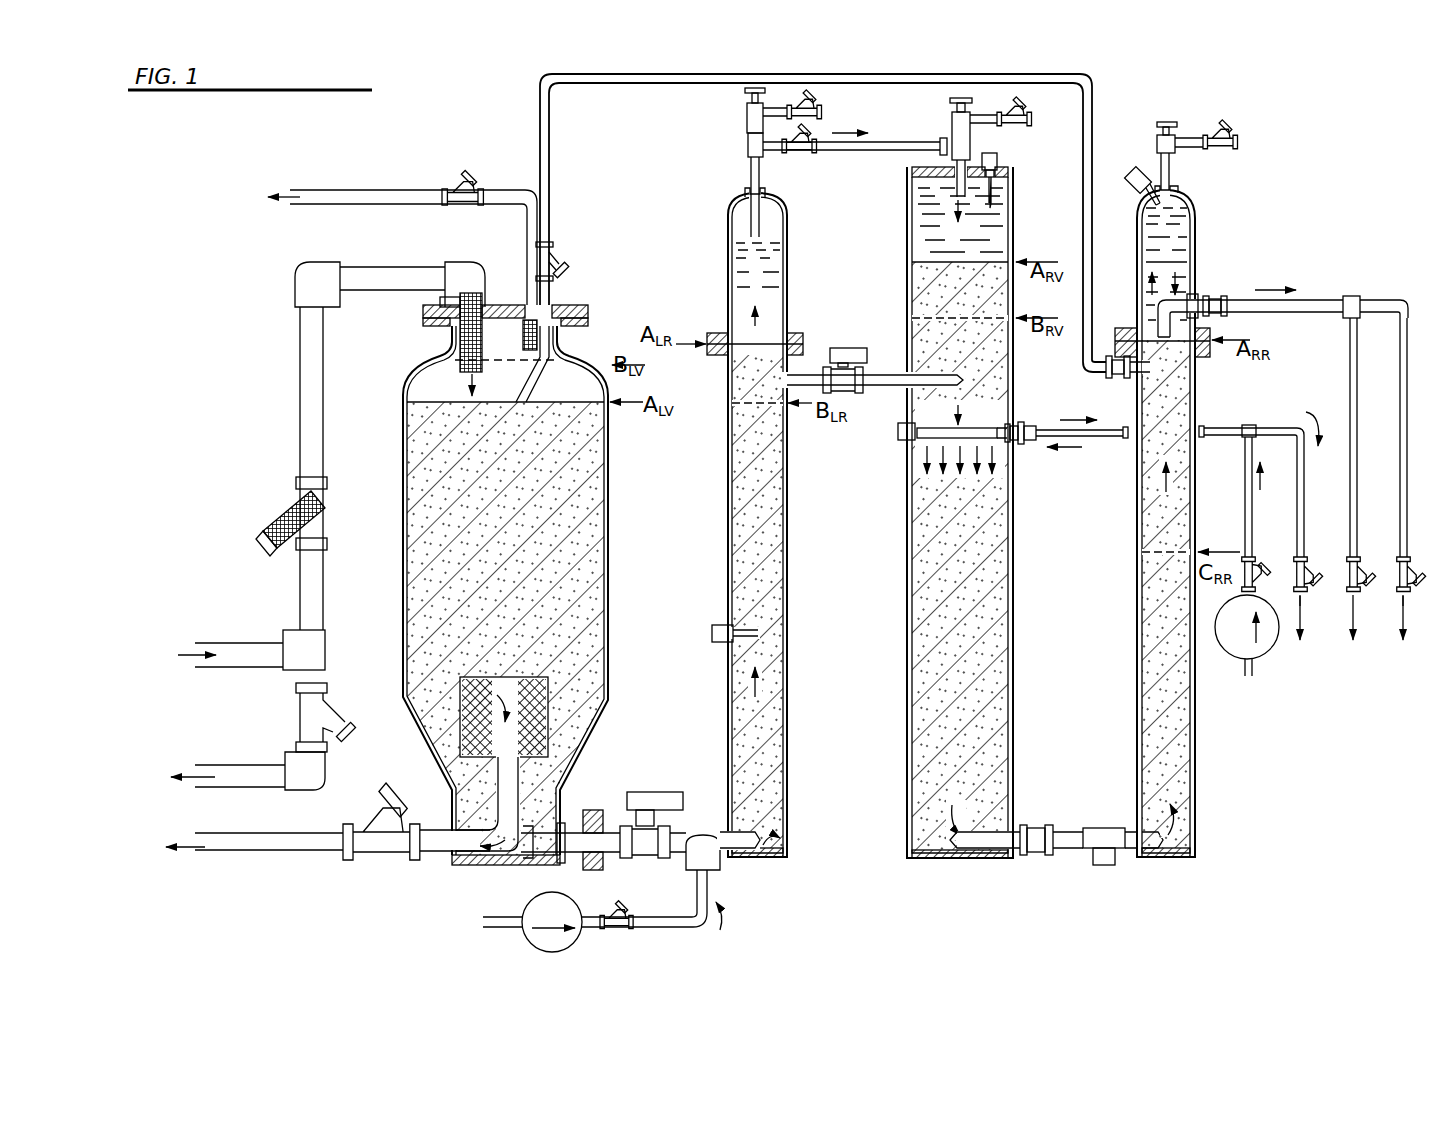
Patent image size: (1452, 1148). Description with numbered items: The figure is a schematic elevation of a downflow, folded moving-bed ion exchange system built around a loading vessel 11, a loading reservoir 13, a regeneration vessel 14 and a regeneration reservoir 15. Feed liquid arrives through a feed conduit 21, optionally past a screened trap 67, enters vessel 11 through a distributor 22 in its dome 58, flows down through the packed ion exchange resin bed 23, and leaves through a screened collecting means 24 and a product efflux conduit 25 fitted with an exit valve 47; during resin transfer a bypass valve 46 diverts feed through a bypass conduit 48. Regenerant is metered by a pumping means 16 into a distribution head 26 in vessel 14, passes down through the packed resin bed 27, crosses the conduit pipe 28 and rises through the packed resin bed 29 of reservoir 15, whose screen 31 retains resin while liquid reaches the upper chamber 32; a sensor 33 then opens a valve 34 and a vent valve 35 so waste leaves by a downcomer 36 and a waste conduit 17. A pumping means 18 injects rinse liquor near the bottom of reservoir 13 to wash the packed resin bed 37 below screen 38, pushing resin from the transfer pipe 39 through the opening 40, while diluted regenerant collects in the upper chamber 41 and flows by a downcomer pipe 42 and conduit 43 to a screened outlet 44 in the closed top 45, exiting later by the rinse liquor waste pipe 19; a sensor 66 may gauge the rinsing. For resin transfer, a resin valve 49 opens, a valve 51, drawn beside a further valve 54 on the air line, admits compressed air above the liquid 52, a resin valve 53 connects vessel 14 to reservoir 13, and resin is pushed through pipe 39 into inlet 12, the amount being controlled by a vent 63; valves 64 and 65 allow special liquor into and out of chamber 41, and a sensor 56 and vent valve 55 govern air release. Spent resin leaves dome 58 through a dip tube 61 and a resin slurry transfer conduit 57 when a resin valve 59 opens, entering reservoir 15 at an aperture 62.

The loading vessel 11 is at (402, 492).
The inlet 12 is at (522, 852).
The loading reservoir 13 is at (790, 574).
The regeneration vessel 14 is at (1015, 546).
The regeneration reservoir 15 is at (1137, 654).
The pumping means 16 is at (1263, 650).
The waste conduit 17 is at (1405, 600).
The pumping means 18 is at (590, 897).
The rinse liquor waste pipe 19 is at (1306, 596).
The feed conduit 21 is at (232, 645).
The distributor 22 is at (458, 346).
The packed ion exchange resin bed 23 is at (505, 628).
The collecting means 24 is at (553, 712).
The product efflux conduit 25 is at (432, 852).
The distribution head 26 is at (921, 440).
The packed resin bed 27 is at (960, 556).
The conduit pipe 28 is at (1066, 848).
The packed resin bed 29 is at (1160, 594).
The foraminous plate or screen 31 is at (1186, 362).
The upper chamber 32 is at (1166, 264).
The sensor 33 is at (1133, 171).
The valve 34 is at (1410, 573).
The vent valve 35 is at (1218, 150).
The downcomer 36 is at (1160, 330).
The packed resin bed 37 is at (757, 601).
The foraminous plate or screen 38 is at (745, 330).
The transfer pipe 39 is at (710, 860).
The opening 40 is at (780, 846).
The upper chamber 41 is at (758, 284).
The downcomer pipe 42 is at (760, 230).
The conduit 43 is at (885, 144).
The screened outlet 44 is at (955, 192).
The closed top 45 is at (912, 170).
The bypass valve 46 is at (306, 718).
The exit valve 47 is at (364, 860).
The bypass conduit 48 is at (231, 768).
The resin valve 49 is at (645, 800).
The valve 51 is at (948, 100).
The liquid 52 is at (960, 225).
The resin valve 53 is at (838, 348).
The valve 54 is at (1016, 130).
The vent valve 55 is at (1157, 120).
The sensor 56 is at (997, 158).
The resin slurry transfer conduit 57 is at (600, 83).
The dome 58 is at (426, 384).
The resin valve 59 is at (560, 256).
The dip tube 61 is at (526, 386).
The aperture 62 is at (1110, 380).
The vent 63 is at (390, 192).
The valve 64 is at (812, 118).
The valve 65 is at (747, 92).
The sensor 66 is at (713, 633).
The screened trap 67 is at (292, 495).